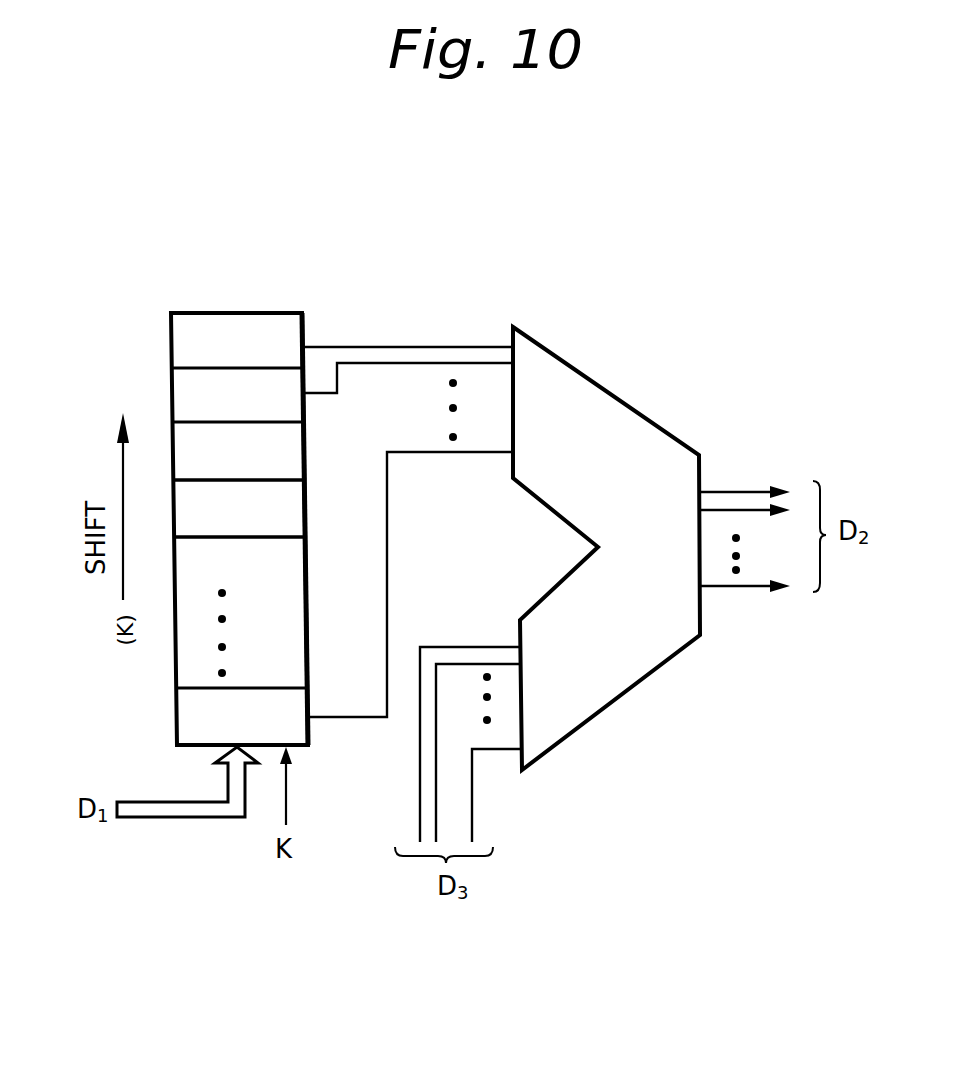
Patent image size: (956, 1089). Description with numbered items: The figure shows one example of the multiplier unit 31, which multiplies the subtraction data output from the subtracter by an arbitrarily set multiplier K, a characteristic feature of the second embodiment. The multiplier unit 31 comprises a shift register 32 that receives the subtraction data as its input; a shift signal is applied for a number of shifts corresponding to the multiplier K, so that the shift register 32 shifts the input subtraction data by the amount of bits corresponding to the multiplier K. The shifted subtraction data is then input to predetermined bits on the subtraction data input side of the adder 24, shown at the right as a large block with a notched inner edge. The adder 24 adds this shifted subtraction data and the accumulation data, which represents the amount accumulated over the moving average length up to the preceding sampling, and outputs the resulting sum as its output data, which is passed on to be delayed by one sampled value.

The multiplier unit 31 is at (258, 479).
The shift register 32 is at (305, 455).
The adder 24 is at (623, 402).